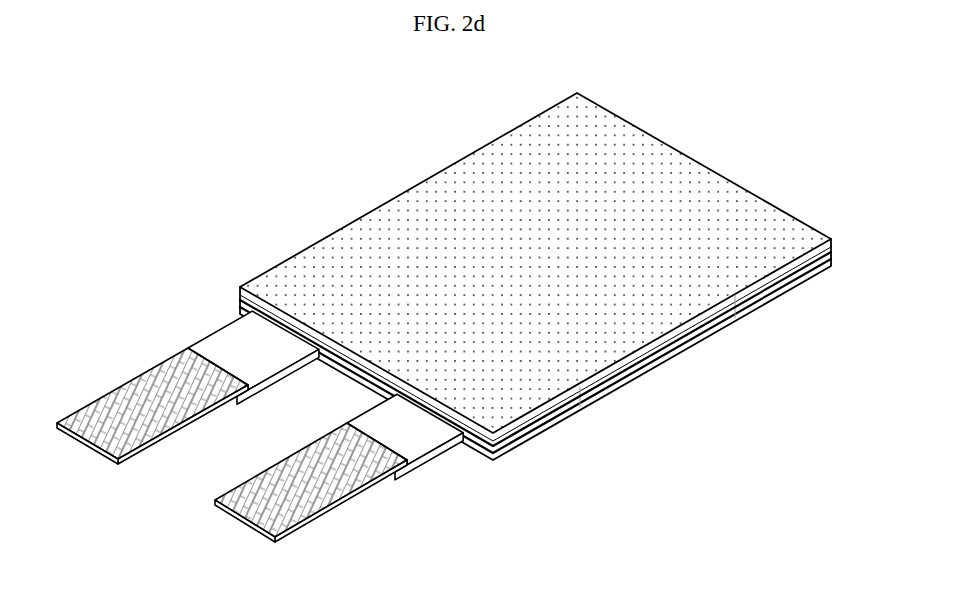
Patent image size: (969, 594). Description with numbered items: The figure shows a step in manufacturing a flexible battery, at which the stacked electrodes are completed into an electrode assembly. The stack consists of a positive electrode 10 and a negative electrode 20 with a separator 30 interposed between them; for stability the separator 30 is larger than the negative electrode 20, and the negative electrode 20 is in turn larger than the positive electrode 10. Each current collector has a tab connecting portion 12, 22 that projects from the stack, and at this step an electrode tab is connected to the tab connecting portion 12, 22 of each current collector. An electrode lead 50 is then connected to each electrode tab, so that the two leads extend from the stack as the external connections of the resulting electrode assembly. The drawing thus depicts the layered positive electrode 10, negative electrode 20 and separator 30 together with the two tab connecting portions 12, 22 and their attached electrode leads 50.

The positive electrode 10 is at (475, 116).
The tab connecting portion 12 is at (437, 432).
The negative electrode 20 is at (740, 335).
The tab connecting portion 22 is at (233, 333).
The separator 30 is at (812, 267).
The electrode lead 50 is at (290, 462).